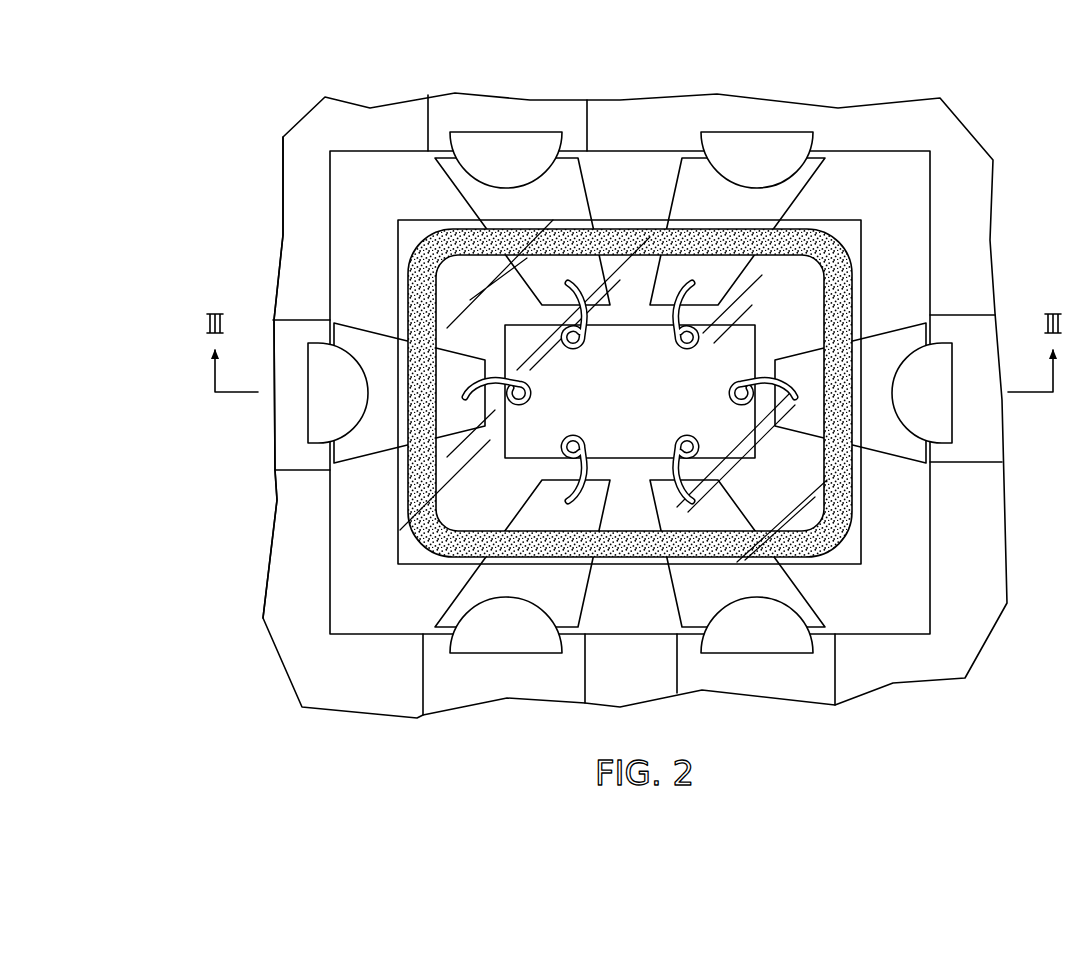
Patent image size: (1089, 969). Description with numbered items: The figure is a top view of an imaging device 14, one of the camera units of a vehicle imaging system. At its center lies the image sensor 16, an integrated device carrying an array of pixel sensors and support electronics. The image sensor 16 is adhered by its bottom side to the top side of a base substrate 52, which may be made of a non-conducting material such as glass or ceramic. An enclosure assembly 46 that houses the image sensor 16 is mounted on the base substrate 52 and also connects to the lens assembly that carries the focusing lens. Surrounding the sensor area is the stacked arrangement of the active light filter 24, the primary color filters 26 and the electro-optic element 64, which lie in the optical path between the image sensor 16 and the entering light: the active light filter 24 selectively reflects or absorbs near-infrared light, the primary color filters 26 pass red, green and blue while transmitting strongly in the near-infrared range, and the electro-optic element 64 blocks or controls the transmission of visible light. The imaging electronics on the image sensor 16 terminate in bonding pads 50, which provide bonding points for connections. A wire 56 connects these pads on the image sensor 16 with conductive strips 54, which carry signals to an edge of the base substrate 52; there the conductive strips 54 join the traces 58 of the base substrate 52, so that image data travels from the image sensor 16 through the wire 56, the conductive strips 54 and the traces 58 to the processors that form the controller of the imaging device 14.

The imaging device 14 is at (837, 78).
The image sensor 16 is at (625, 330).
The active light filter 24 is at (588, 295).
The primary color filters 26 is at (588, 295).
The electro-optic element 64 is at (423, 243).
The enclosure assembly 46 is at (326, 147).
The bonding pads 50 is at (727, 393).
The base substrate 52 is at (328, 257).
The conductive strips 54 is at (893, 340).
The wire 56 is at (692, 464).
The traces 58 is at (935, 357).